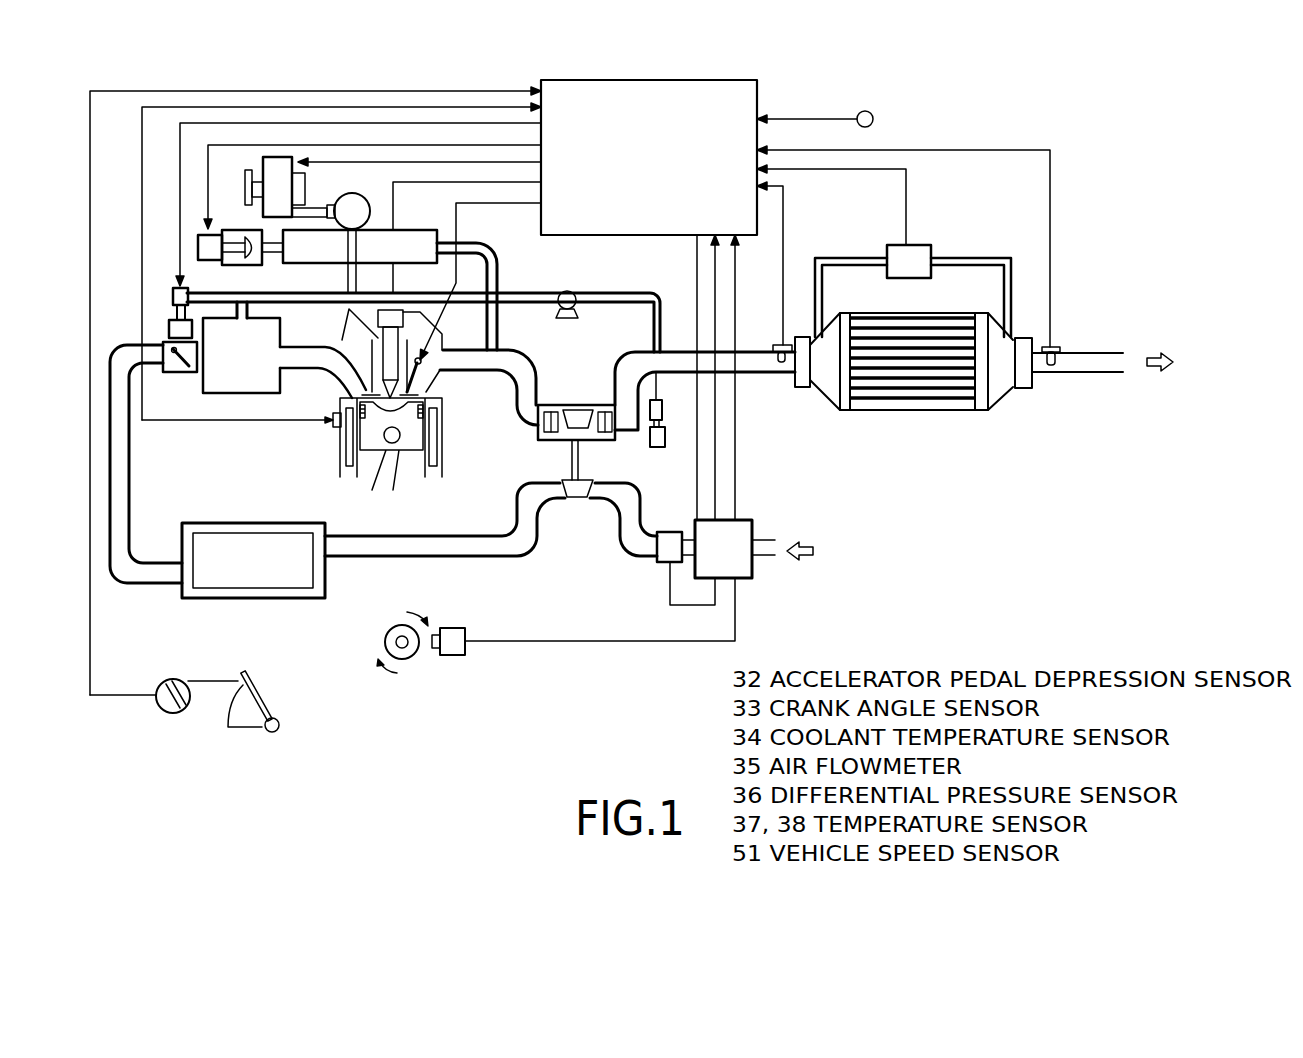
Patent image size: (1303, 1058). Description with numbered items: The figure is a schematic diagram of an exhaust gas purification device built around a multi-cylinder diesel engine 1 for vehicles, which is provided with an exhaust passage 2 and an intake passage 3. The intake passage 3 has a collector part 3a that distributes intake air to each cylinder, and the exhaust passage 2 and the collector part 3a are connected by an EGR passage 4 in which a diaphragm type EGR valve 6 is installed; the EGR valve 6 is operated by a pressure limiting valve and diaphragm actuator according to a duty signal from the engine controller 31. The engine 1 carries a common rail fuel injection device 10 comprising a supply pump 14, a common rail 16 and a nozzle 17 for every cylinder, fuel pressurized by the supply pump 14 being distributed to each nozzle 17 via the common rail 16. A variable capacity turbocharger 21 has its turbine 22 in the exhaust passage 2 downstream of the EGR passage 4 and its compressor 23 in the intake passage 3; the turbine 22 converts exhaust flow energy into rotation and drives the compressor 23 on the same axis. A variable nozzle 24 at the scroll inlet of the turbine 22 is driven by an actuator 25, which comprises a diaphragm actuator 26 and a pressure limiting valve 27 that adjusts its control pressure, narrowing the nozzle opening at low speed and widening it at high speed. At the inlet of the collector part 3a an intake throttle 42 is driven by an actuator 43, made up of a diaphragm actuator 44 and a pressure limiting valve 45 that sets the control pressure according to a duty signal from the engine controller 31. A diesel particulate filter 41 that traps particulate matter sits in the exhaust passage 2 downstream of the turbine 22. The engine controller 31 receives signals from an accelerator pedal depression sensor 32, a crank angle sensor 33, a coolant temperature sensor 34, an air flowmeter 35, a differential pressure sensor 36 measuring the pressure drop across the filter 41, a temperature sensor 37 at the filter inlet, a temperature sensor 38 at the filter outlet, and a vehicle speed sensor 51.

The multi-cylinder diesel engine 1 is at (387, 420).
The exhaust passage 2 is at (522, 370).
The intake passage 3 is at (303, 352).
The collector part 3a is at (213, 378).
The exhaust gas recirculation (EGR) passage 4 is at (497, 270).
The EGR valve 6 is at (222, 262).
The common rail fuel injection device 10 is at (325, 186).
The supply pump 14 is at (277, 157).
The common rail 16 is at (353, 193).
The nozzle 17 is at (398, 322).
The variable capacity turbocharger 21 is at (587, 518).
The turbine 22 is at (568, 422).
The compressor 23 is at (572, 508).
The variable nozzle 24 is at (543, 423).
The actuator 25 is at (676, 431).
The diaphragm actuator 26 is at (653, 443).
The pressure limiting valve 27 is at (678, 403).
The engine controller 31 is at (654, 80).
The accelerator pedal depression sensor 32 is at (165, 712).
The crank angle sensor 33 is at (452, 657).
The coolant temperature sensor 34 is at (333, 422).
The air flowmeter 35 is at (658, 568).
The differential pressure sensor 36 is at (917, 247).
The temperature sensor 37 is at (778, 342).
The temperature sensor 38 is at (1060, 343).
The diesel particulate filter 41 is at (950, 398).
The intake throttle 42 is at (173, 352).
The actuator 43 is at (154, 318).
The diaphragm actuator 44 is at (170, 327).
The pressure limiting valve 45 is at (173, 295).
The vehicle speed sensor 51 is at (877, 121).